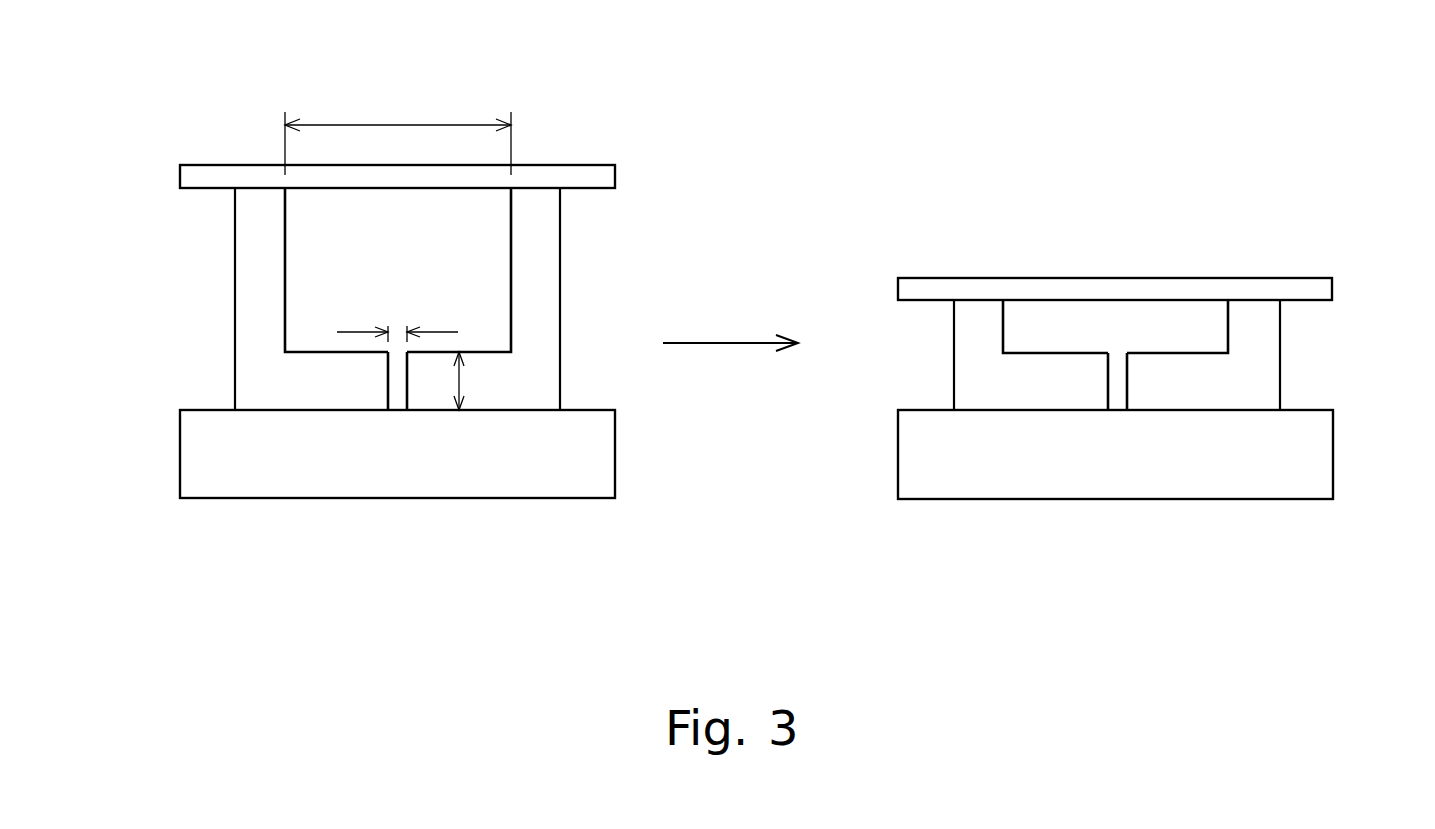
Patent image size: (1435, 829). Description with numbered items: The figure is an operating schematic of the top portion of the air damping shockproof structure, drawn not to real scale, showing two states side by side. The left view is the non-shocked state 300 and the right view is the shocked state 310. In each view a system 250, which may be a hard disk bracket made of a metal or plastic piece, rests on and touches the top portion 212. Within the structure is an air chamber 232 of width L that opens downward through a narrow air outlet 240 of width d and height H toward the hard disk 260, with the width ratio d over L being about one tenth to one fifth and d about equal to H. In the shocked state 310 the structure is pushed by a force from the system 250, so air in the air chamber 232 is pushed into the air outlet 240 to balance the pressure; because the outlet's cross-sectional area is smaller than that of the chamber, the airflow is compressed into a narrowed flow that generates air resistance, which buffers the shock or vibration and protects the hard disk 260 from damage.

The non-shocked state 300 is at (263, 43).
The shocked state 310 is at (943, 143).
The system 250 is at (565, 175).
The air chamber 232 is at (480, 250).
The top portion 212 is at (538, 328).
The air outlet 240 is at (388, 385).
The hard disk 260 is at (398, 478).